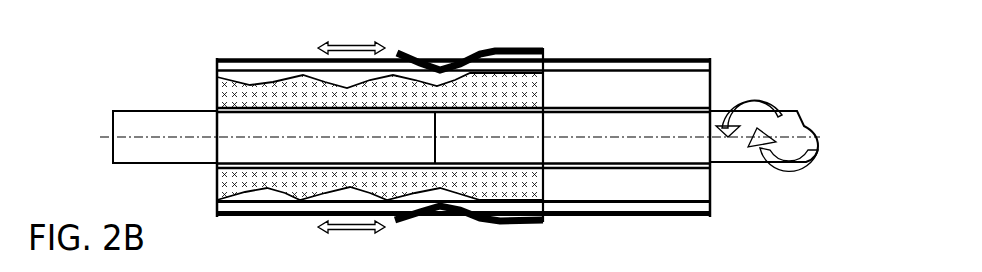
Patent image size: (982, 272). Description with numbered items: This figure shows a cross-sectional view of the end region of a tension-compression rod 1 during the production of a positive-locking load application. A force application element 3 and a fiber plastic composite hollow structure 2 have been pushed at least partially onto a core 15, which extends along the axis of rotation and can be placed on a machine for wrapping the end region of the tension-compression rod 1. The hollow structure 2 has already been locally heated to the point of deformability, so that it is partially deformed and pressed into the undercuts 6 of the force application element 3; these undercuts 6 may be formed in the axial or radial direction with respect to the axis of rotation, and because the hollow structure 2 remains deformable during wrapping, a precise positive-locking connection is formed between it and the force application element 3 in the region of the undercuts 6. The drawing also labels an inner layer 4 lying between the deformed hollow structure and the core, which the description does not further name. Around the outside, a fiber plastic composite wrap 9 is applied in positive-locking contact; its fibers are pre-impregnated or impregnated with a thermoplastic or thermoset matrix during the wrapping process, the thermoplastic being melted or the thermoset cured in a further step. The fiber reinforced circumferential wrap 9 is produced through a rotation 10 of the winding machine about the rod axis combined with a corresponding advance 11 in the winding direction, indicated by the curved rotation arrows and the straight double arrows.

The tension-compression rod 1 is at (741, 82).
The fiber plastic composite hollow structure 2 is at (665, 65).
The force application element 3 is at (510, 81).
The inner tube 4 is at (310, 105).
The undercut 6 is at (274, 79).
The fiber plastic composite wrap 9 is at (520, 218).
The rotation of a winding machine 10 is at (826, 162).
The advance in the winding direction 11 is at (321, 240).
The core 15 is at (645, 152).